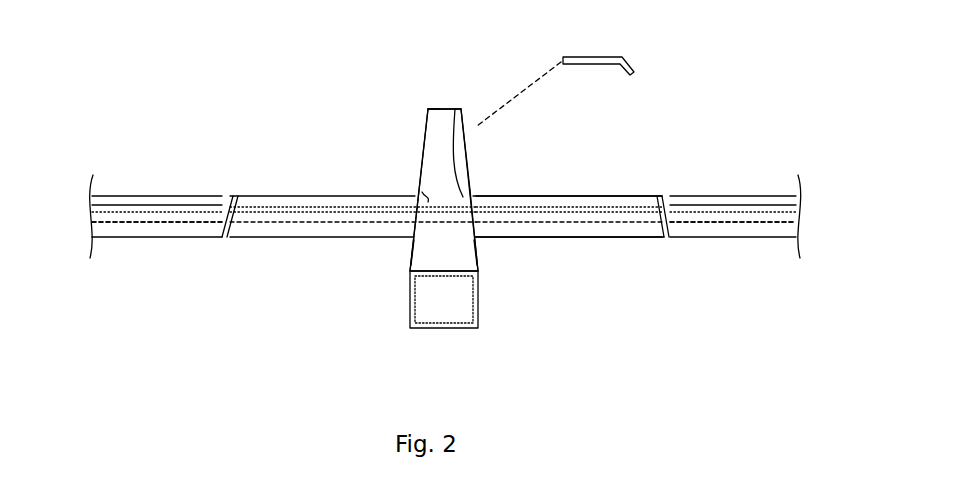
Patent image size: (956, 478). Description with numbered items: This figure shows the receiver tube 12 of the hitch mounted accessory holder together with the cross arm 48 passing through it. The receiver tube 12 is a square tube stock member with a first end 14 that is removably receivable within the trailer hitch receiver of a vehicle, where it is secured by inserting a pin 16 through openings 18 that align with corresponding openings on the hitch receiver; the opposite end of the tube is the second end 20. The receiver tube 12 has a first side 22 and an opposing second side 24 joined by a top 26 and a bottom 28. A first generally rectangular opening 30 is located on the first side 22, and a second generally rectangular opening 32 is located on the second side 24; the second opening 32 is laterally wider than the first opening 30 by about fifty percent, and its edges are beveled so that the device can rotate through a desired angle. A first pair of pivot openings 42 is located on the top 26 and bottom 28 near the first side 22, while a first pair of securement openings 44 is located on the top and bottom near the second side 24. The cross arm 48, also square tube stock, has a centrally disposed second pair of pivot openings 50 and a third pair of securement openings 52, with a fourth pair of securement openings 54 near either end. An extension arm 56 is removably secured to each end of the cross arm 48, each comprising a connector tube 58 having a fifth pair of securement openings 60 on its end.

The receiver tube 12 is at (486, 274).
The first end 14 is at (447, 110).
The pin 16 is at (608, 57).
The openings 18 is at (473, 128).
The second end 20 is at (430, 318).
The first side 22 is at (427, 140).
The second side 24 is at (483, 138).
The top 26 is at (428, 110).
The bottom 28 is at (458, 328).
The first opening 30 is at (400, 195).
The second opening 32 is at (483, 196).
The first pair of pivot openings 42 is at (432, 212).
The first pair of securement openings 44 is at (455, 125).
The cross arm 48 is at (630, 241).
The second pair of pivot openings 50 is at (412, 245).
The third pair of securement openings 52 is at (495, 245).
The fourth pair of securement openings 54 is at (333, 196).
The extension arm 56 is at (122, 241).
The connector tube 58 is at (245, 236).
The fifth pair of securement openings 60 is at (330, 243).